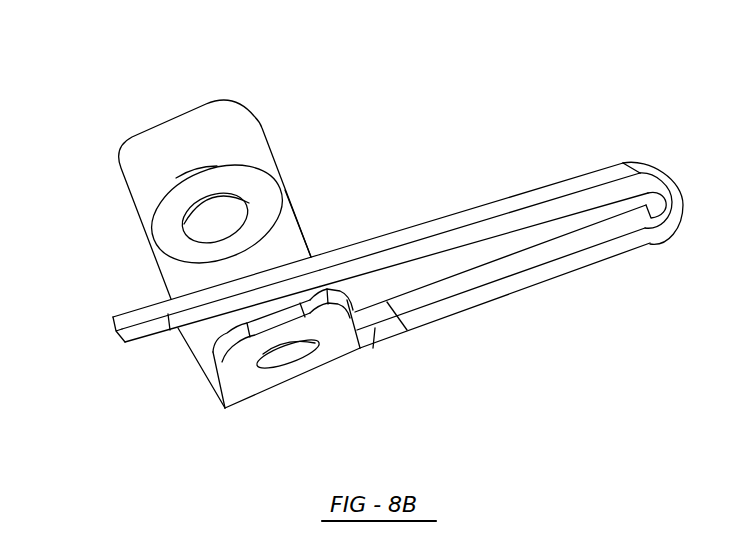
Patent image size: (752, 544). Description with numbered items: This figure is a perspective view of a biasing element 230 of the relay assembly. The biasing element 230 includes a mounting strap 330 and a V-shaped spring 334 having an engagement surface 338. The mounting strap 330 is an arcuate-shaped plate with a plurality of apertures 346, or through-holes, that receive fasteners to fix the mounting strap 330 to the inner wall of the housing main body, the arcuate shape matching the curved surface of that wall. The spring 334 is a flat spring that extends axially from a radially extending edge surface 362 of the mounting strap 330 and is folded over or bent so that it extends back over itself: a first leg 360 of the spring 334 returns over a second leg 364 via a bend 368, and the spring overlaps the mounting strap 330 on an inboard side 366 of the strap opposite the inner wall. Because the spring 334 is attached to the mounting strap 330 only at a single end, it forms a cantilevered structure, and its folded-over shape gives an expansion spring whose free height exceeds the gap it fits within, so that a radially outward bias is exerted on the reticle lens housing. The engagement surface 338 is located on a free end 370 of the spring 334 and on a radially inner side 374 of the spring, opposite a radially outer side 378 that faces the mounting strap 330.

The biasing element 230 is at (503, 75).
The mounting strap 330 is at (245, 390).
The V-shaped spring 334 is at (607, 248).
The engagement surface 338 is at (150, 303).
The apertures 346 is at (224, 206).
The first leg 360 is at (572, 185).
The radially extending edge surface 362 is at (285, 190).
The second leg 364 is at (527, 273).
The inboard side 366 is at (288, 248).
The bend 368 is at (674, 194).
The free end 370 is at (118, 330).
The radially inner side 374 is at (462, 217).
The radially outer side 378 is at (403, 265).